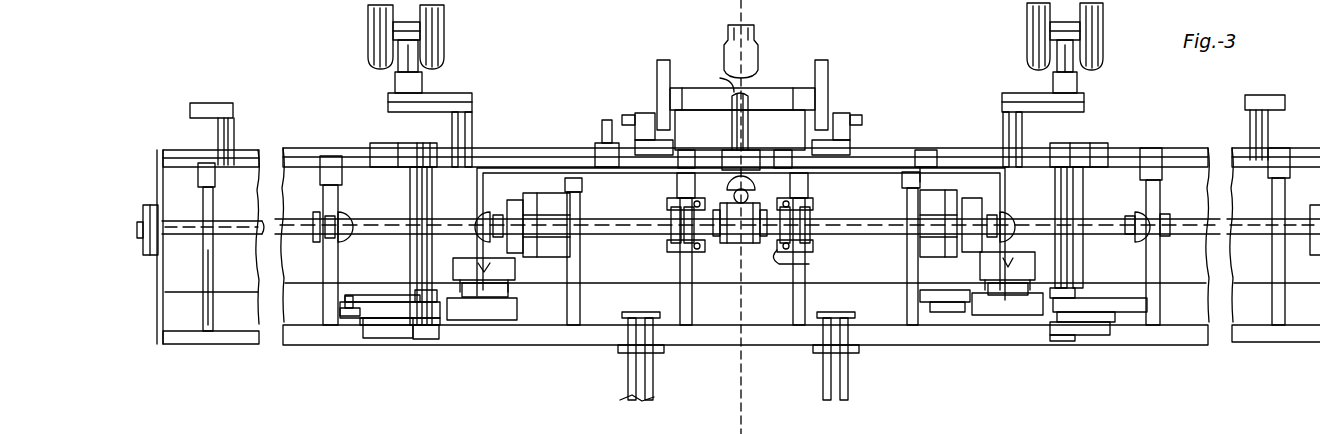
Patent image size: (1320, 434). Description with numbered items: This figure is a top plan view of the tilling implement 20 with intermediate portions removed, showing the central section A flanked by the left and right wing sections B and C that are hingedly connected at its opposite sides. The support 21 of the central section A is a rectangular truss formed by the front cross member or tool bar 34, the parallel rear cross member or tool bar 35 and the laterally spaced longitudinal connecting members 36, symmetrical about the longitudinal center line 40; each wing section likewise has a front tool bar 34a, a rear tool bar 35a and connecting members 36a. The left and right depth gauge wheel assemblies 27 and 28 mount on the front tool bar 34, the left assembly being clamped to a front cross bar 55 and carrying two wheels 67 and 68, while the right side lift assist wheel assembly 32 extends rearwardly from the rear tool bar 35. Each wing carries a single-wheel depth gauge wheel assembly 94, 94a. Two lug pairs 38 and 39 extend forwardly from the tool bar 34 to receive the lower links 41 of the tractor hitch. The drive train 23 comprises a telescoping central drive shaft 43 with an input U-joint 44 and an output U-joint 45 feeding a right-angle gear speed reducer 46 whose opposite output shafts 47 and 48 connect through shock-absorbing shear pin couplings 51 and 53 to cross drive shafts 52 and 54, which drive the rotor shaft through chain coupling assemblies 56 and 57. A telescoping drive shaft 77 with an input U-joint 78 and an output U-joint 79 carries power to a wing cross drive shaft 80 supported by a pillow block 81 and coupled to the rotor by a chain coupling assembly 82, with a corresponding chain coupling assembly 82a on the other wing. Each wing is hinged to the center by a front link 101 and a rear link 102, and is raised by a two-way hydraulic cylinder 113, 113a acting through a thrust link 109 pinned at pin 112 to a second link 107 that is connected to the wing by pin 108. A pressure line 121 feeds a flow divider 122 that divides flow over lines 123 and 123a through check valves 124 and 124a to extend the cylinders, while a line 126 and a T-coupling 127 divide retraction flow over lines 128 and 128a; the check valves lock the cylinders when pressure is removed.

The tilling implement 20 is at (156, 344).
The support 21 is at (741, 347).
The drive train 23 is at (757, 112).
The left side depth gauge wheel assembly 27 is at (473, 62).
The right side depth gauge wheel assembly 28 is at (1100, 72).
The right side lift assist wheel assembly 32 is at (852, 398).
The front cross member or tool bar 34 is at (545, 148).
The front tool bar 34a is at (182, 148).
The rear cross member or tool bar 35 is at (581, 340).
The rear tool bar 35a is at (237, 340).
The longitudinal connecting members 36 is at (700, 298).
The connecting members 36a is at (205, 262).
The lug pair 38 is at (648, 106).
The lug pair 39 is at (850, 98).
The longitudinal center line 40 is at (741, 8).
The lower links of the hitch 41 is at (662, 60).
The central drive shaft 43 is at (720, 78).
The input universal joint 44 is at (758, 58).
The output universal joint 45 is at (757, 186).
The right-angle gear speed reducer 46 is at (746, 246).
The output shaft 47 is at (710, 246).
The output shaft 48 is at (806, 252).
The shock-absorbing shear pin coupling 51 is at (666, 232).
The cross drive shaft 52 is at (652, 219).
The shock-absorbing shear pin coupling 53 is at (804, 204).
The cross drive shaft 54 is at (878, 220).
The front cross bar 55 is at (468, 100).
The chain coupling assembly 56 is at (507, 212).
The chain coupling assembly 57 is at (973, 214).
The wheel 67 is at (368, 40).
The wheel 68 is at (445, 32).
The drive shaft 77 is at (441, 222).
The input universal joint 78 is at (478, 232).
The output universal joint 79 is at (342, 224).
The cross drive shaft 80 is at (232, 224).
The pillow block 81 is at (310, 234).
The chain coupling assembly 82 is at (142, 200).
The chain coupling assembly 82a is at (1305, 217).
The depth gauge wheel assembly 94 is at (218, 101).
The depth gauge wheel assembly 94a is at (1259, 94).
The front link 101 is at (384, 141).
The rear link 102 is at (414, 340).
The second link 107 is at (356, 298).
The pin 108 is at (346, 320).
The thrust link 109 is at (432, 342).
The pin 112 is at (363, 330).
The two-way hydraulic cylinder 113 is at (487, 305).
The two-way hydraulic cylinder 113a is at (1020, 302).
The pressure line 121 is at (757, 114).
The flow divider 122 is at (725, 148).
The line 123 is at (596, 166).
The line 123a is at (858, 166).
The check valve 124 is at (515, 270).
The check valve 124a is at (1037, 258).
The line 126 is at (629, 122).
The T-coupling 127 is at (602, 136).
The line 128 is at (543, 148).
The line 128a is at (956, 152).
The central section A is at (968, 345).
The left side wing section B is at (316, 347).
The right side wing section C is at (1190, 343).